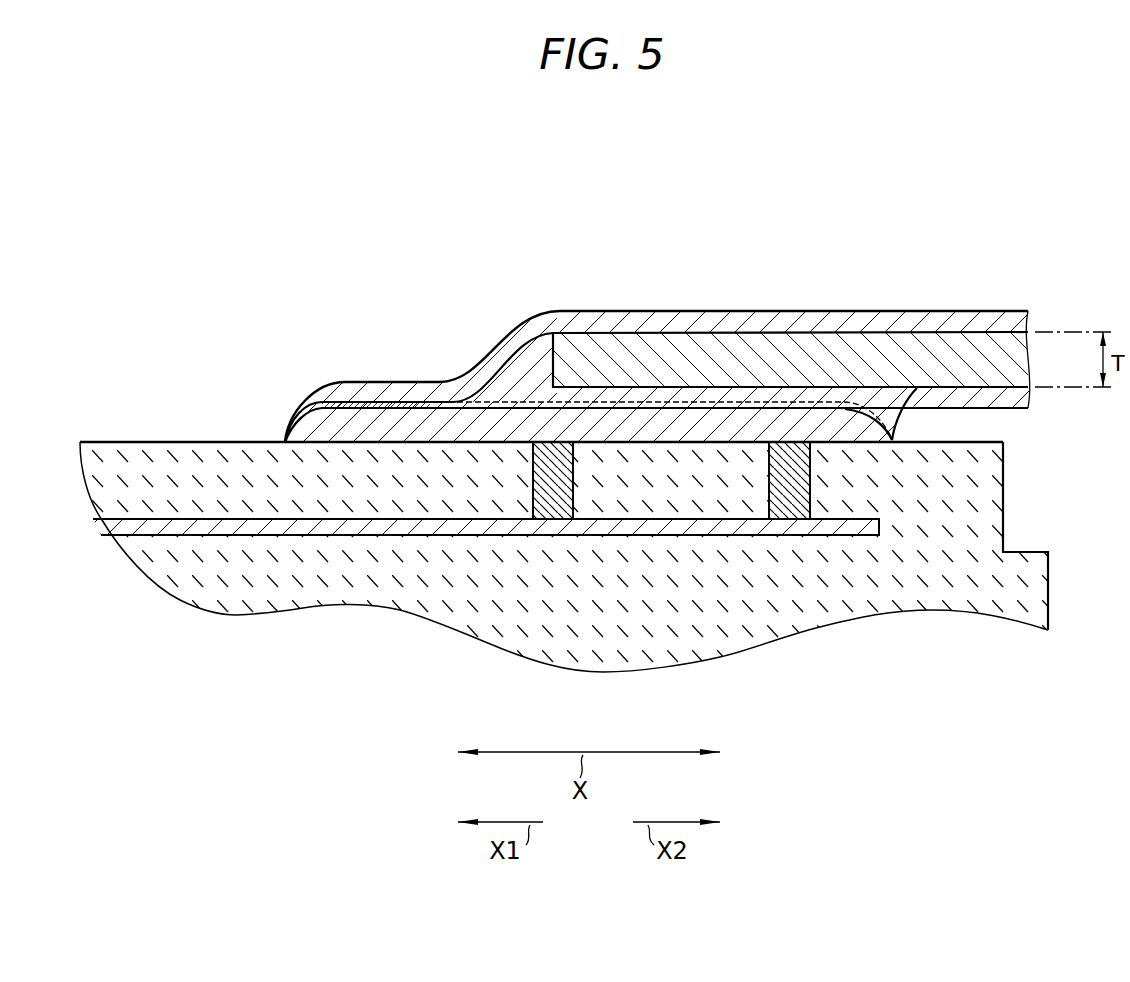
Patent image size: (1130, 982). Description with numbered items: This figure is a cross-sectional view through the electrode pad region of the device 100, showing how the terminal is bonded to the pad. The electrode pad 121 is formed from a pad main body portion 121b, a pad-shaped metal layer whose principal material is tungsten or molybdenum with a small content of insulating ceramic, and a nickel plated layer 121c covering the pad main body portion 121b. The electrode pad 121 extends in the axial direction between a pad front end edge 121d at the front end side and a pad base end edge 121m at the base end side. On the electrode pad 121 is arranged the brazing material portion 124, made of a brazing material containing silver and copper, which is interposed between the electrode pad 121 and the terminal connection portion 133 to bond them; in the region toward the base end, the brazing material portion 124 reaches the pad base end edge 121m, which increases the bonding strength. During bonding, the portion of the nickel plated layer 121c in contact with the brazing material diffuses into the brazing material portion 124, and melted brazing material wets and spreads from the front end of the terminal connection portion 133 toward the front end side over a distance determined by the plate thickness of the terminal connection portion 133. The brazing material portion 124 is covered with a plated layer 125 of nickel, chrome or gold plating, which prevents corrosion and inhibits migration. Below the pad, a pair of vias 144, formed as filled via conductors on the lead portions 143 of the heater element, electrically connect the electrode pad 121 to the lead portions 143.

The display device 100 is at (660, 238).
The electrode pad 121 is at (599, 345).
The pad main body portion 121b is at (342, 381).
The nickel plated layer 121c is at (313, 403).
The pad front end edge 121d is at (285, 440).
The pad base end edge 121m is at (892, 437).
The brazing material portion 124 is at (521, 387).
The plated layer 125 is at (386, 423).
The terminal connection portion 133 is at (697, 345).
The lead portion 143 is at (744, 528).
The via 144 is at (547, 472).